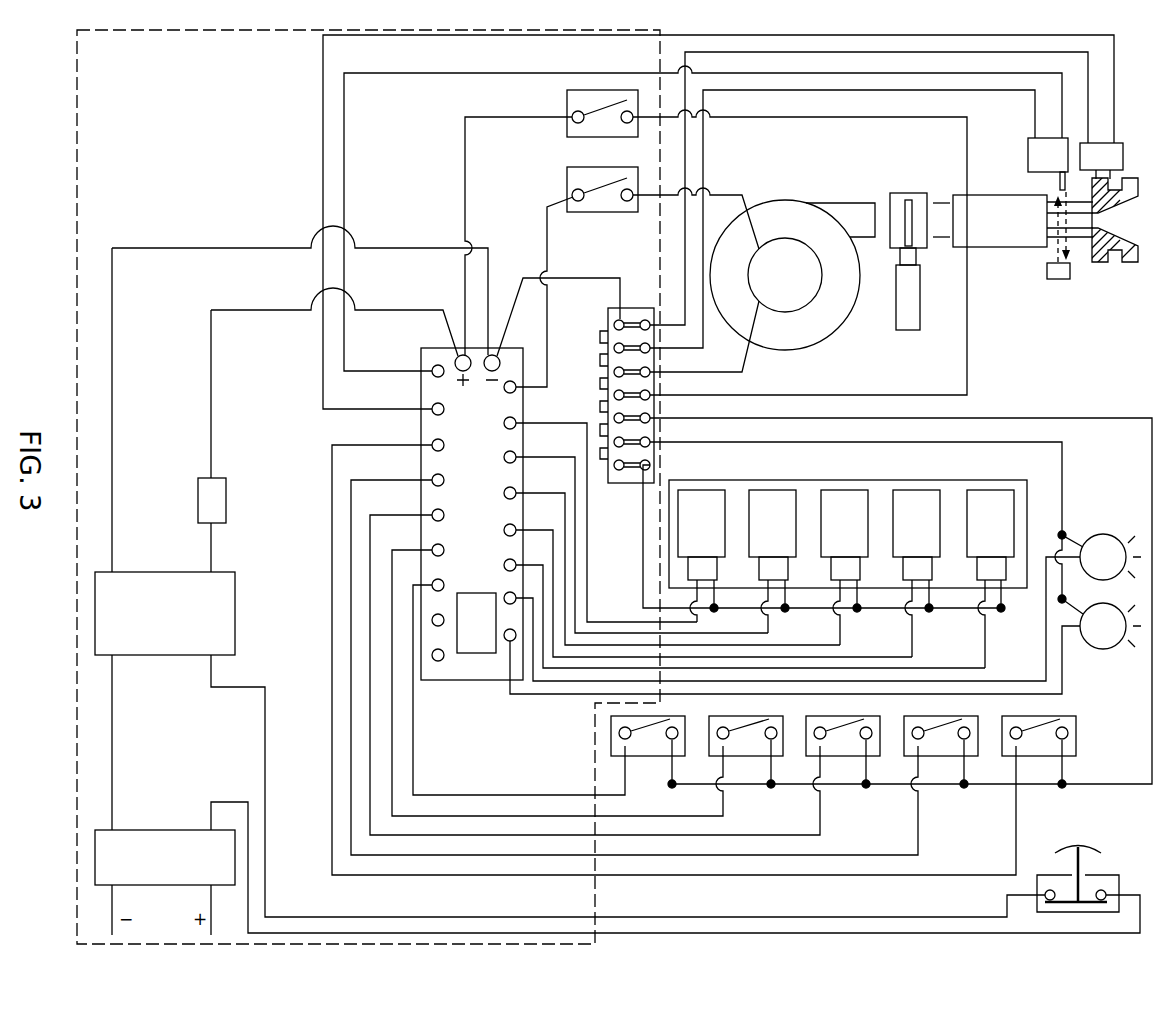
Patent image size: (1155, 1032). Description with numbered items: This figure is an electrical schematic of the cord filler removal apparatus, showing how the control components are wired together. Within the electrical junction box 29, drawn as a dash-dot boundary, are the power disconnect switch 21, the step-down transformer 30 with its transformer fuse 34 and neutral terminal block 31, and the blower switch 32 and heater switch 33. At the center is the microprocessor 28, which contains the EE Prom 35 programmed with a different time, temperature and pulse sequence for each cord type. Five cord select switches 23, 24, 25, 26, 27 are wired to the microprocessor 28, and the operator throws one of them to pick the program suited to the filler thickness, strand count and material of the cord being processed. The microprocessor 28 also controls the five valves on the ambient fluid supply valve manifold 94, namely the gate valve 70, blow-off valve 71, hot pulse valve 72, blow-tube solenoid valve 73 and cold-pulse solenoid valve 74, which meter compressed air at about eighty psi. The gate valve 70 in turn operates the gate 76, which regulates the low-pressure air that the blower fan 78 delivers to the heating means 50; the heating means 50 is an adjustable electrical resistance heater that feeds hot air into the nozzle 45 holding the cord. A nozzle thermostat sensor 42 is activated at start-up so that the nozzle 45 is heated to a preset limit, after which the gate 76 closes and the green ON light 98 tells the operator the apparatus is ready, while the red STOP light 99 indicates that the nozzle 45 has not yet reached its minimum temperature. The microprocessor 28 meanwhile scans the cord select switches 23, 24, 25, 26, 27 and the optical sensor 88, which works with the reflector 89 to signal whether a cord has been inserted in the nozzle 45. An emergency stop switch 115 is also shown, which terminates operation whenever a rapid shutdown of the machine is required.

The power disconnect switch 21 is at (147, 868).
The cord select switch 23 is at (1039, 736).
The cord select switch 24 is at (941, 736).
The cord select switch 25 is at (843, 736).
The cord select switch 26 is at (746, 736).
The cord select switch 27 is at (648, 736).
The microprocessor 28 is at (465, 504).
The electrical junction box 29 is at (80, 132).
The step-down transformer 30 is at (147, 625).
The neutral terminal block 31 is at (624, 306).
The blower switch 32 is at (593, 213).
The heater switch 33 is at (593, 137).
The transformer fuse 34 is at (203, 510).
The EE Prom 35 is at (466, 637).
The nozzle thermostat sensor 42 is at (1091, 167).
The nozzle 45 is at (1130, 270).
The heating means 50 is at (990, 231).
The gate valve 70 is at (980, 531).
The blow-off valve 71 is at (835, 531).
The hot pulse valve 72 is at (692, 531).
The blow-tube solenoid valve 73 is at (907, 531).
The cold-pulse solenoid valve 74 is at (763, 531).
The gate 76 is at (918, 190).
The blower fan 78 is at (775, 286).
The optical sensor 88 is at (1038, 166).
The reflector 89 is at (1068, 282).
The ambient fluid supply valve manifold 94 is at (842, 480).
The ON light 98 is at (1093, 532).
The STOP light 99 is at (1090, 654).
The emergency stop switch 115 is at (1084, 846).